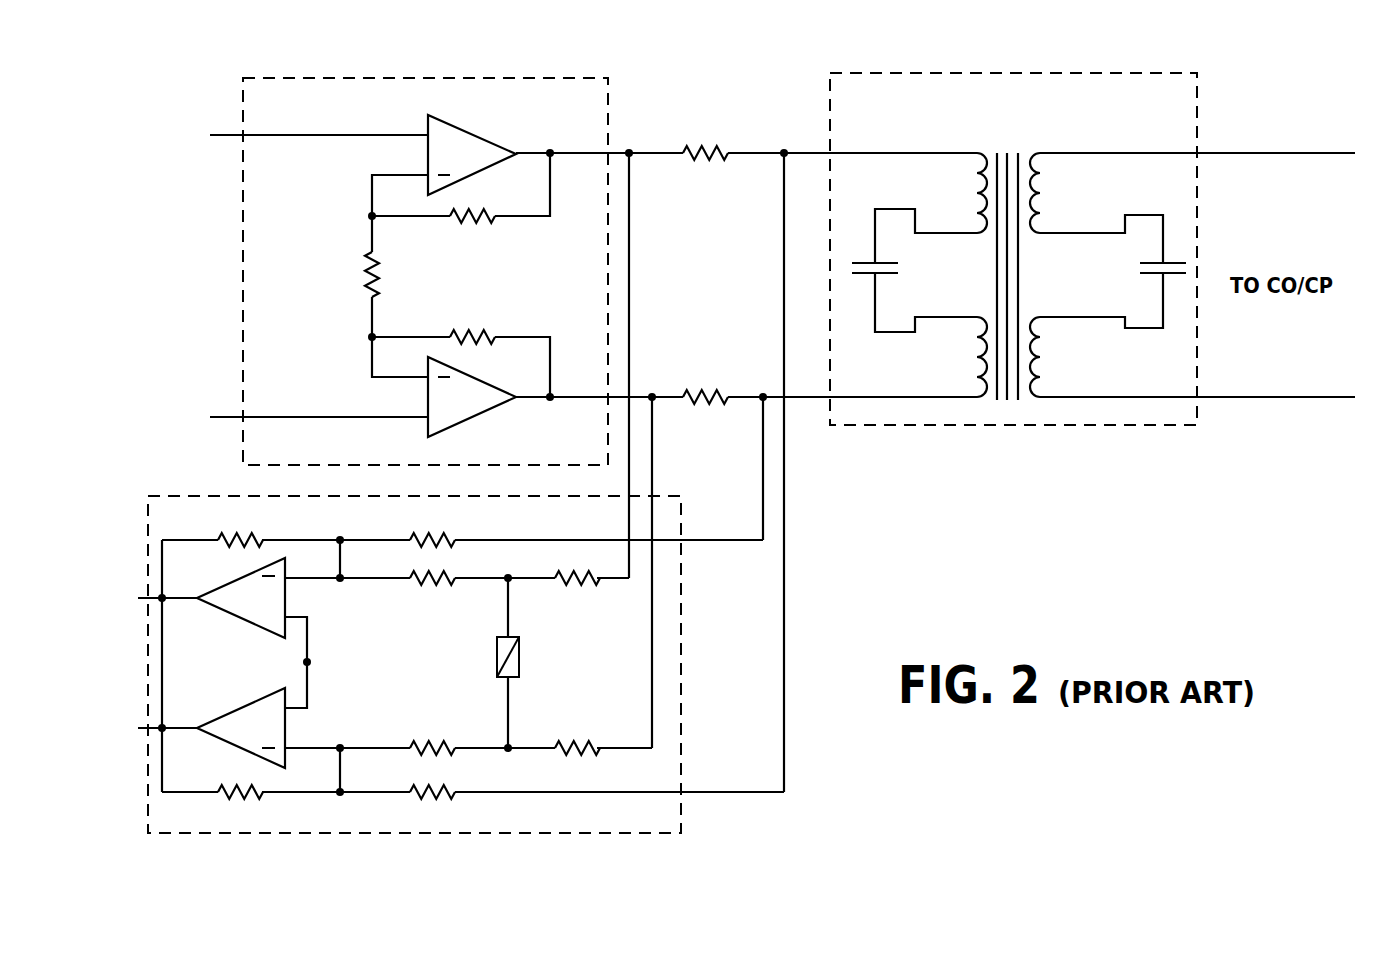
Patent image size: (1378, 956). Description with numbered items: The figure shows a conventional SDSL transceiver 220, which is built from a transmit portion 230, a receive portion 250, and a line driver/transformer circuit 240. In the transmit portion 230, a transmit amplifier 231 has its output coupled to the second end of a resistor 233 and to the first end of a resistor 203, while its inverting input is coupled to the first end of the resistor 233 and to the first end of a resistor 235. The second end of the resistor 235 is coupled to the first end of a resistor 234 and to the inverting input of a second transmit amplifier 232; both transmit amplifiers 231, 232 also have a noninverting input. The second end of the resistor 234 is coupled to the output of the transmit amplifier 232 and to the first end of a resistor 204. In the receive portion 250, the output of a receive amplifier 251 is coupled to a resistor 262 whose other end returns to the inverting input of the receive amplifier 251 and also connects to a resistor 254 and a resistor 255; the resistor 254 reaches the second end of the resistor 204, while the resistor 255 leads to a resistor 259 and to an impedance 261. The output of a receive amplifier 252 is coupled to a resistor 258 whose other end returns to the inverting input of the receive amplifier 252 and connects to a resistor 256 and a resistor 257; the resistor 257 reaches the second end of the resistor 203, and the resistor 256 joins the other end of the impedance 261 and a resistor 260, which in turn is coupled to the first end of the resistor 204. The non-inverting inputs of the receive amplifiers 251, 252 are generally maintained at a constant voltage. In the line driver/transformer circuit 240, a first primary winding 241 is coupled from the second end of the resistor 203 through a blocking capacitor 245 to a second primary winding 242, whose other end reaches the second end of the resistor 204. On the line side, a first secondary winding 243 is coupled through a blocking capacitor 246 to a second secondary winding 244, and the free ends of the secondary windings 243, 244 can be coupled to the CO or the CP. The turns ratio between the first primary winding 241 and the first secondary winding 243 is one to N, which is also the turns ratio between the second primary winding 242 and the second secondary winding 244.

The SDSL transceiver 220 is at (729, 72).
The resistor 203 is at (717, 140).
The resistor 204 is at (714, 382).
The transmit portion 230 is at (578, 115).
The transmit amplifier 231 is at (479, 165).
The transmit amplifier 232 is at (474, 409).
The resistor 233 is at (484, 224).
The resistor 234 is at (478, 325).
The resistor 235 is at (354, 273).
The line driver/transformer circuit 240 is at (1171, 105).
The first primary winding 241 is at (963, 178).
The second primary winding 242 is at (966, 340).
The first secondary winding 243 is at (1051, 183).
The second secondary winding 244 is at (1047, 338).
The blocking capacitor 245 is at (918, 267).
The blocking capacitor 246 is at (1137, 263).
The receive portion 250 is at (189, 530).
The receive amplifier 251 is at (277, 610).
The receive amplifier 252 is at (274, 740).
The resistor 254 is at (571, 523).
The resistor 255 is at (441, 591).
The resistor 256 is at (445, 731).
The resistor 257 is at (439, 803).
The resistor 258 is at (246, 805).
The resistor 259 is at (582, 588).
The resistor 260 is at (567, 727).
The impedance 261 is at (530, 649).
The resistor 262 is at (243, 527).